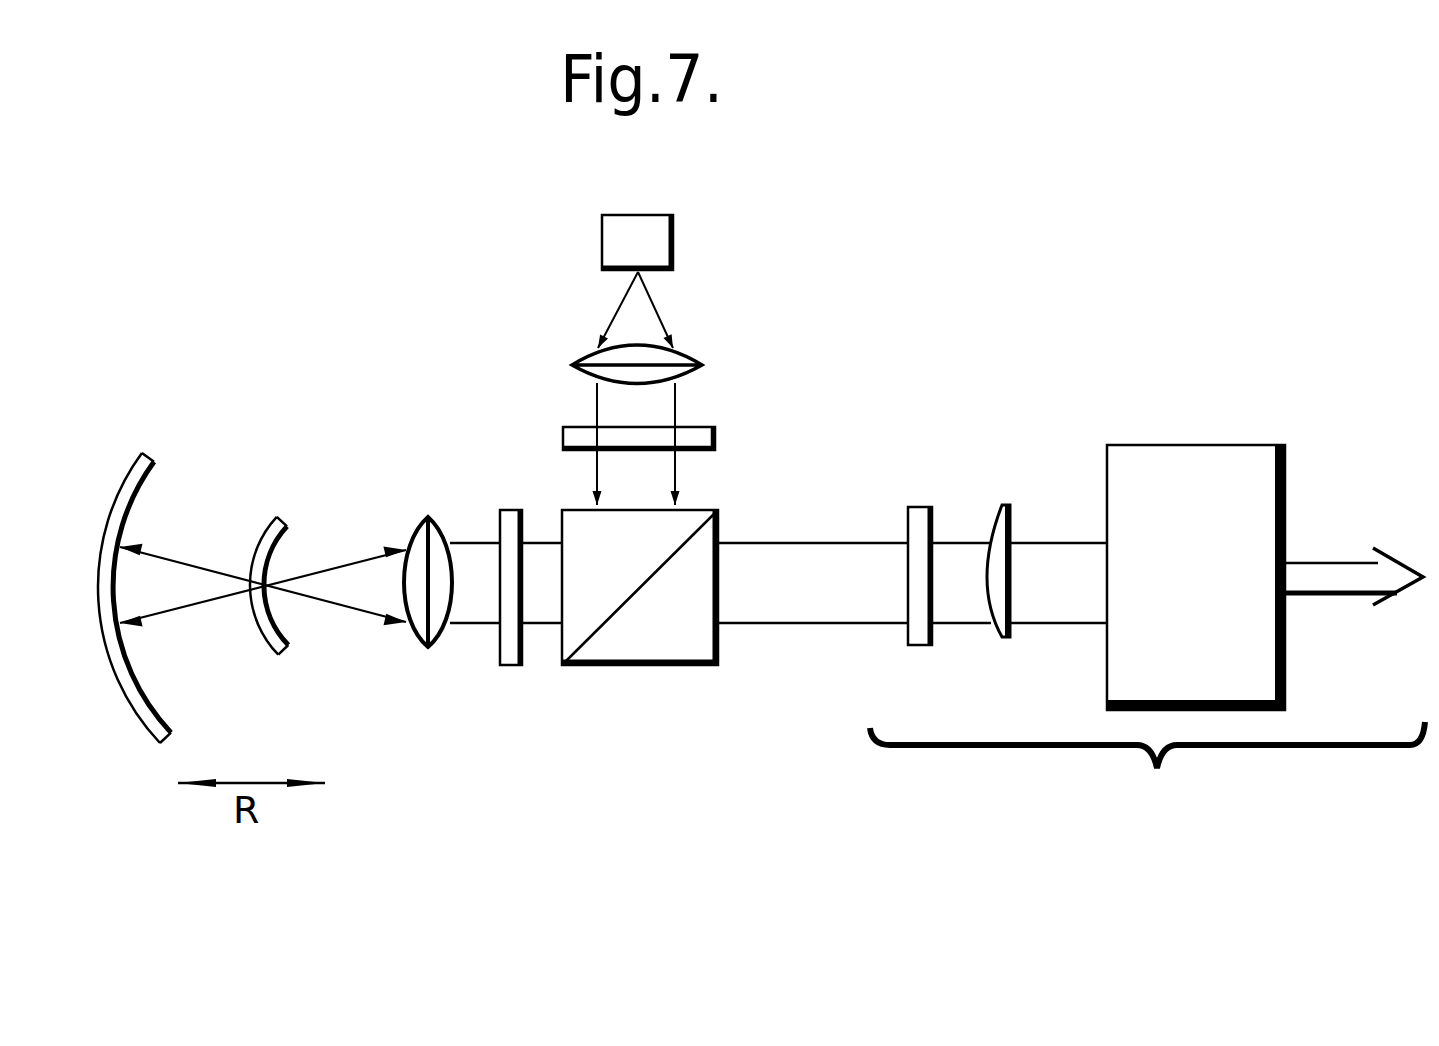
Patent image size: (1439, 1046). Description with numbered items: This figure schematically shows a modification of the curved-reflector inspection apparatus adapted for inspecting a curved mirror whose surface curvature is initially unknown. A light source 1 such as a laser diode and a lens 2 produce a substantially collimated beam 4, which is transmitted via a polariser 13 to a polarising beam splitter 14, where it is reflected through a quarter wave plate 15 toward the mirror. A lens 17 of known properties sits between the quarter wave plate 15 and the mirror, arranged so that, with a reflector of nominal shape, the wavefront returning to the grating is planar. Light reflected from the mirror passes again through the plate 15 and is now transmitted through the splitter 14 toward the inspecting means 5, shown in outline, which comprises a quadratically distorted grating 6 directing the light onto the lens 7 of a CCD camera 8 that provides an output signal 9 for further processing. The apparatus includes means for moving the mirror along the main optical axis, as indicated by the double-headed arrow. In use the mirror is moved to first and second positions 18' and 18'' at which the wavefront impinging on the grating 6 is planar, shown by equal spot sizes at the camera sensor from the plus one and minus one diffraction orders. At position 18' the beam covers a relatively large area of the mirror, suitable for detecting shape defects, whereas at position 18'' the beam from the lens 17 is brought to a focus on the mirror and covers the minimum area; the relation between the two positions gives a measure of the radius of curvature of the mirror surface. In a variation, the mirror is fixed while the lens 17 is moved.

The light source 1 is at (608, 226).
The lens 2 is at (680, 358).
The collimated beam 4 is at (634, 411).
The polariser 13 is at (697, 437).
The polarising beam splitter 14 is at (643, 642).
The quarter wave plate 15 is at (510, 655).
The lens 17 is at (414, 522).
The first position of the mirror 18' is at (150, 551).
The second position of the mirror 18'' is at (263, 521).
The quadratically distorted grating 6 is at (913, 632).
The lens 7 is at (1000, 632).
The CCD camera 8 is at (1198, 613).
The output signal 9 is at (1326, 577).
The inspecting means 5 is at (1147, 771).